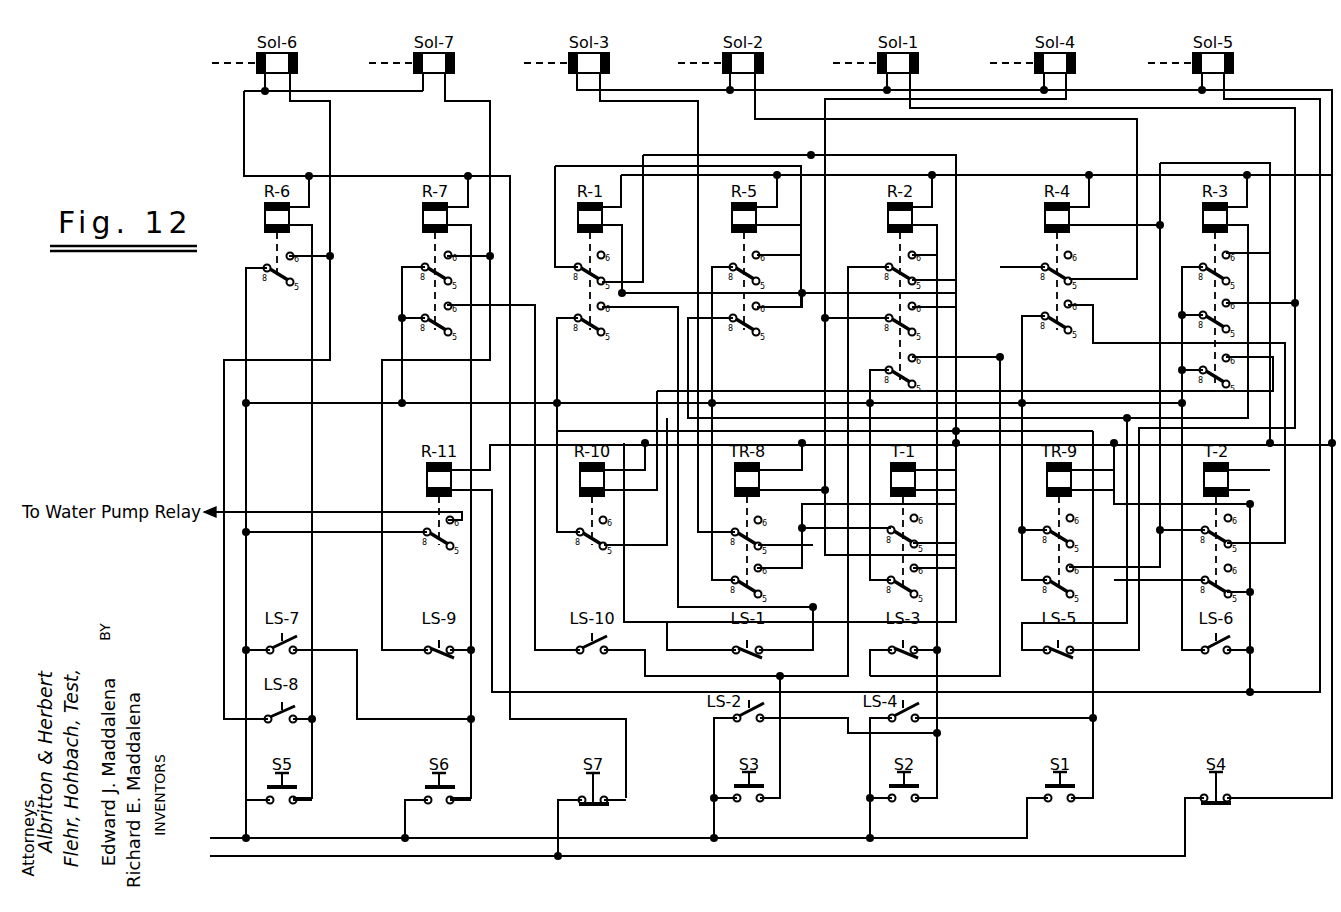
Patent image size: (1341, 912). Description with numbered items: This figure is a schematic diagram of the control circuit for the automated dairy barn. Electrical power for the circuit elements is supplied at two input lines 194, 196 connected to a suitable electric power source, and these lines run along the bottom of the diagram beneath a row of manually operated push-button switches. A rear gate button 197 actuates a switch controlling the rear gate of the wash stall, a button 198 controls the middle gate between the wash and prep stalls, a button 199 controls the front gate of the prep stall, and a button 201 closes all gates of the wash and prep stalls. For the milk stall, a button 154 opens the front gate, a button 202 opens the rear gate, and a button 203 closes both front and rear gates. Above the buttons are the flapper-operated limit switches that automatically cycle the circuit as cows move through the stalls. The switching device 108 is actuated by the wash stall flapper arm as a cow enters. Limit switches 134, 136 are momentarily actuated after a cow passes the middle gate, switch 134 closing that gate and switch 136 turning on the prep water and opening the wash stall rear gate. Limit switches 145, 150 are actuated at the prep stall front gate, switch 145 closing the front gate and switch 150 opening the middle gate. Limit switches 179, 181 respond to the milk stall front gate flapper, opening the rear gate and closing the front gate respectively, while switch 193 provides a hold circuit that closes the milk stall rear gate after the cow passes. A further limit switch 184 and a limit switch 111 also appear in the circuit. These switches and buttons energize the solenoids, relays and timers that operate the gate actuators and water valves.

The limit switch 179 is at (283, 658).
The limit switch 181 is at (285, 728).
The switch 193 is at (440, 662).
The limit switch LS-10 184 is at (586, 660).
The limit switch 145 is at (735, 662).
The limit switch 134 is at (898, 658).
The switching device 108 is at (1058, 656).
The limit switch LS-6 111 is at (1210, 657).
The limit switch 150 is at (748, 724).
The limit switch 136 is at (920, 702).
The button 154 is at (280, 804).
The button 202 is at (438, 804).
The button 203 is at (590, 808).
The button 199 is at (748, 802).
The button 198 is at (903, 802).
The rear gate button 197 is at (1059, 802).
The button 201 is at (1214, 807).
The input line 194 is at (234, 838).
The input line 196 is at (236, 856).